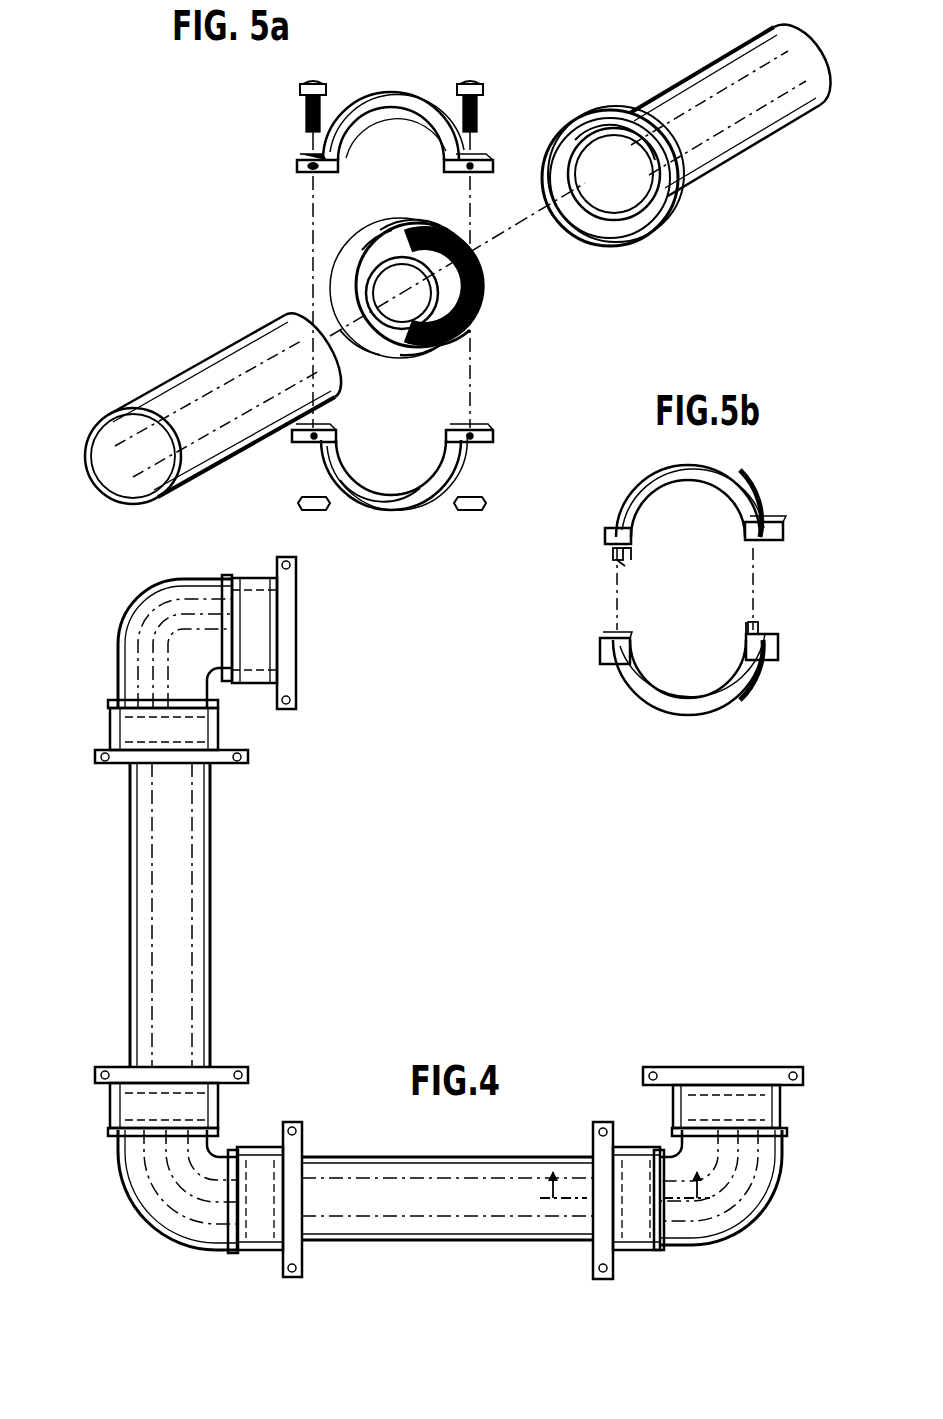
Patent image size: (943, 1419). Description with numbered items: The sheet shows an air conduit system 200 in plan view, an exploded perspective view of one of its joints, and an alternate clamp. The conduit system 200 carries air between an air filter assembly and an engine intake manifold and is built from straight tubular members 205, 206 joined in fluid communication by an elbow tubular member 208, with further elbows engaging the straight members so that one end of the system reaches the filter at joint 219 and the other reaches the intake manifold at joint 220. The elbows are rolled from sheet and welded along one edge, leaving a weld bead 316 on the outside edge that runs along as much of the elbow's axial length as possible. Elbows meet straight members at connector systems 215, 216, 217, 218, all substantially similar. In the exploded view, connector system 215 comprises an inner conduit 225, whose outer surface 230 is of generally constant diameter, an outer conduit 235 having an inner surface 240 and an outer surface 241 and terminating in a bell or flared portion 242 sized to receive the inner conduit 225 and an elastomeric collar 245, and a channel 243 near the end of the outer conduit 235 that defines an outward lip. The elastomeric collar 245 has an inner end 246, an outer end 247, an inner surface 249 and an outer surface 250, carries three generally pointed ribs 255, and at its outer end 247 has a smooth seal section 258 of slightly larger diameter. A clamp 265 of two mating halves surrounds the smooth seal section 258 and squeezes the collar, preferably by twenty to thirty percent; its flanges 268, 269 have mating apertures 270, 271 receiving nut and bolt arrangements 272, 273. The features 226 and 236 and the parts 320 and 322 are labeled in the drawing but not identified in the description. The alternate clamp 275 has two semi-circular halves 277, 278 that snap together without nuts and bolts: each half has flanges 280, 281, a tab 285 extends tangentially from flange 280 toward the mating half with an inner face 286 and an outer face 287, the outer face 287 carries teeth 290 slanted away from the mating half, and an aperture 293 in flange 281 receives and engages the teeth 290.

In FIG. 4, the conduit system 200 is at (120, 1029).
In FIG. 4, the straight tubular member 205 is at (214, 887).
In FIG. 4, the straight tubular member 206 is at (443, 1243).
In FIG. 4, the elbow tubular member 208 is at (185, 1203).
In FIG. 5a, the connector system 215 is at (572, 82).
In FIG. 4, the connector system 215 is at (226, 733).
In FIG. 4, the connector system 216 is at (229, 1098).
In FIG. 4, the connector system 217 is at (268, 1213).
In FIG. 4, the connector system 218 is at (640, 1217).
In FIG. 4, the joint 219 is at (783, 1108).
In FIG. 4, the joint 220 is at (262, 605).
In FIG. 4, the weld bead 316 is at (120, 632).
In FIG. 5a, the inner conduit 225 is at (178, 492).
In FIG. 5a, the pipe end 226 is at (272, 316).
In FIG. 5a, the outer surface 230 is at (240, 386).
In FIG. 5a, the outer conduit 235 is at (787, 132).
In FIG. 5a, the pipe end 236 is at (652, 228).
In FIG. 5a, the inner surface 240 is at (570, 236).
In FIG. 5a, the outer surface 241 is at (748, 82).
In FIG. 5a, the bell or flared portion 242 is at (702, 196).
In FIG. 5a, the channel 243 is at (612, 110).
In FIG. 5a, the elastomeric collar 245 is at (428, 358).
In FIG. 5a, the inner end 246 is at (478, 272).
In FIG. 5a, the outer end 247 is at (362, 360).
In FIG. 5a, the inner surface 249 is at (338, 290).
In FIG. 5a, the outer surface 250 is at (480, 338).
In FIG. 5a, the ribs 255 is at (433, 224).
In FIG. 5a, the smooth seal section 258 is at (388, 242).
In FIG. 5a, the clamp 265 is at (408, 93).
In FIG. 5a, the flange 268 is at (300, 164).
In FIG. 5a, the flange 269 is at (487, 160).
In FIG. 5a, the aperture 270 is at (300, 172).
In FIG. 5a, the aperture 271 is at (482, 155).
In FIG. 5a, the nut and bolt arrangement 272 is at (320, 76).
In FIG. 5a, the nut and bolt arrangement 273 is at (476, 76).
In FIG. 5a, the lower clamp half 320 is at (373, 470).
In FIG. 5a, the clamp inner surface 322 is at (358, 503).
In FIG. 5b, the clamp 275 is at (796, 511).
In FIG. 5b, the mating semi-circular half 277 is at (652, 492).
In FIG. 5b, the mating semi-circular half 278 is at (745, 692).
In FIG. 5b, the flange 280 is at (607, 535).
In FIG. 5b, the flange 281 is at (790, 532).
In FIG. 5b, the tab 285 is at (627, 556).
In FIG. 5b, the inner face 286 is at (628, 565).
In FIG. 5b, the outer face 287 is at (605, 556).
In FIG. 5b, the teeth 290 is at (612, 565).
In FIG. 5b, the aperture 293 is at (772, 522).